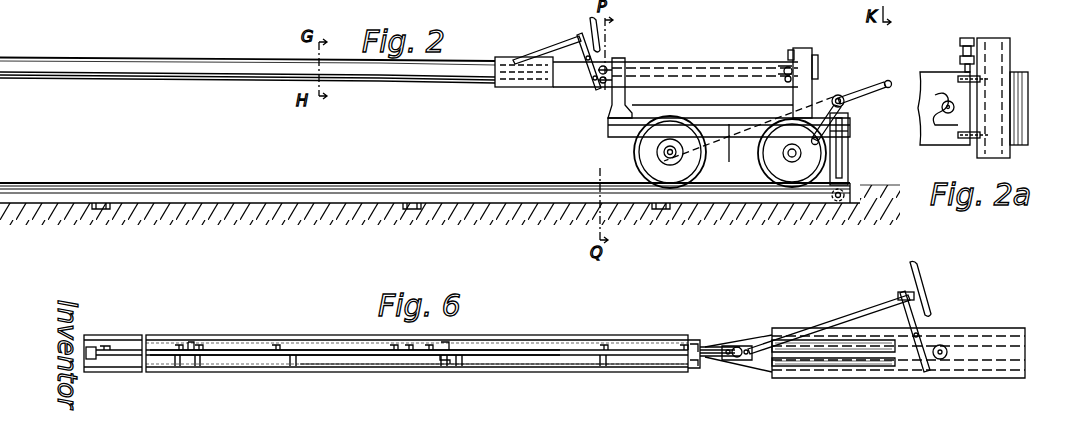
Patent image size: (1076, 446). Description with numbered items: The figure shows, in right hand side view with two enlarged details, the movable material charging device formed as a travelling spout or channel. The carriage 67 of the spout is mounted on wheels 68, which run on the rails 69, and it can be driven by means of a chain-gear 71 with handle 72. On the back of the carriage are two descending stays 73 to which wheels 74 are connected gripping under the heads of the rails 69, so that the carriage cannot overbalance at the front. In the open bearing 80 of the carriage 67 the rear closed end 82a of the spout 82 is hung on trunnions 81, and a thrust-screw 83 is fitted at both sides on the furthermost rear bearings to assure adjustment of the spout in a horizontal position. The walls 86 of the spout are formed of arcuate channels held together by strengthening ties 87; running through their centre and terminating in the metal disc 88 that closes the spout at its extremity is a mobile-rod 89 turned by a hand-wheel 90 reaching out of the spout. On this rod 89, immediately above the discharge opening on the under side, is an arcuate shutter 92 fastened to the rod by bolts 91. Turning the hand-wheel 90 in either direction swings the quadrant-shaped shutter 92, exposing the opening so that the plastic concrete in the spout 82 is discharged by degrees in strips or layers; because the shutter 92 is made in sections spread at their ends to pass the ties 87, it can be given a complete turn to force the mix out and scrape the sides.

In FIG. 2, the carriage 67 is at (729, 150).
In FIG. 2, the wheels 68 is at (634, 155).
In FIG. 2, the rails 69 is at (463, 187).
In FIG. 2, the chain-gear 71 is at (745, 115).
In FIG. 2, the handle 72 is at (862, 88).
In FIG. 2, the descending stays 73 is at (850, 150).
In FIG. 2, the wheels 74 is at (838, 203).
In FIG. 2, the open bearing 80 is at (620, 72).
In FIG. 2A, the open bearing 80 is at (946, 92).
In FIG. 2, the trunnions 81 is at (612, 75).
In FIG. 2A, the trunnions 81 is at (941, 105).
In FIG. 6, the trunnions 81 is at (942, 346).
In FIG. 2, the spout 82 is at (72, 60).
In FIG. 6, the spout 82 is at (548, 337).
In FIG. 2, the rear closed end of the spout 82a is at (690, 62).
In FIG. 2A, the rear closed end of the spout 82a is at (1022, 72).
In FIG. 6, the rear closed end of the spout 82a is at (976, 337).
In FIG. 2, the thrust-screw 83 is at (792, 55).
In FIG. 2A, the thrust-screw 83 is at (968, 38).
In FIG. 6, the walls of the spout 86 is at (503, 348).
In FIG. 6, the strengthening ties 87 is at (192, 345).
In FIG. 6, the metal disc 88 is at (86, 345).
In FIG. 6, the mobile-rod 89 is at (303, 348).
In FIG. 2, the hand-wheel 90 is at (588, 22).
In FIG. 6, the hand-wheel 90 is at (912, 277).
In FIG. 6, the bolts 91 is at (290, 367).
In FIG. 6, the arcuate shutter 92 is at (364, 370).